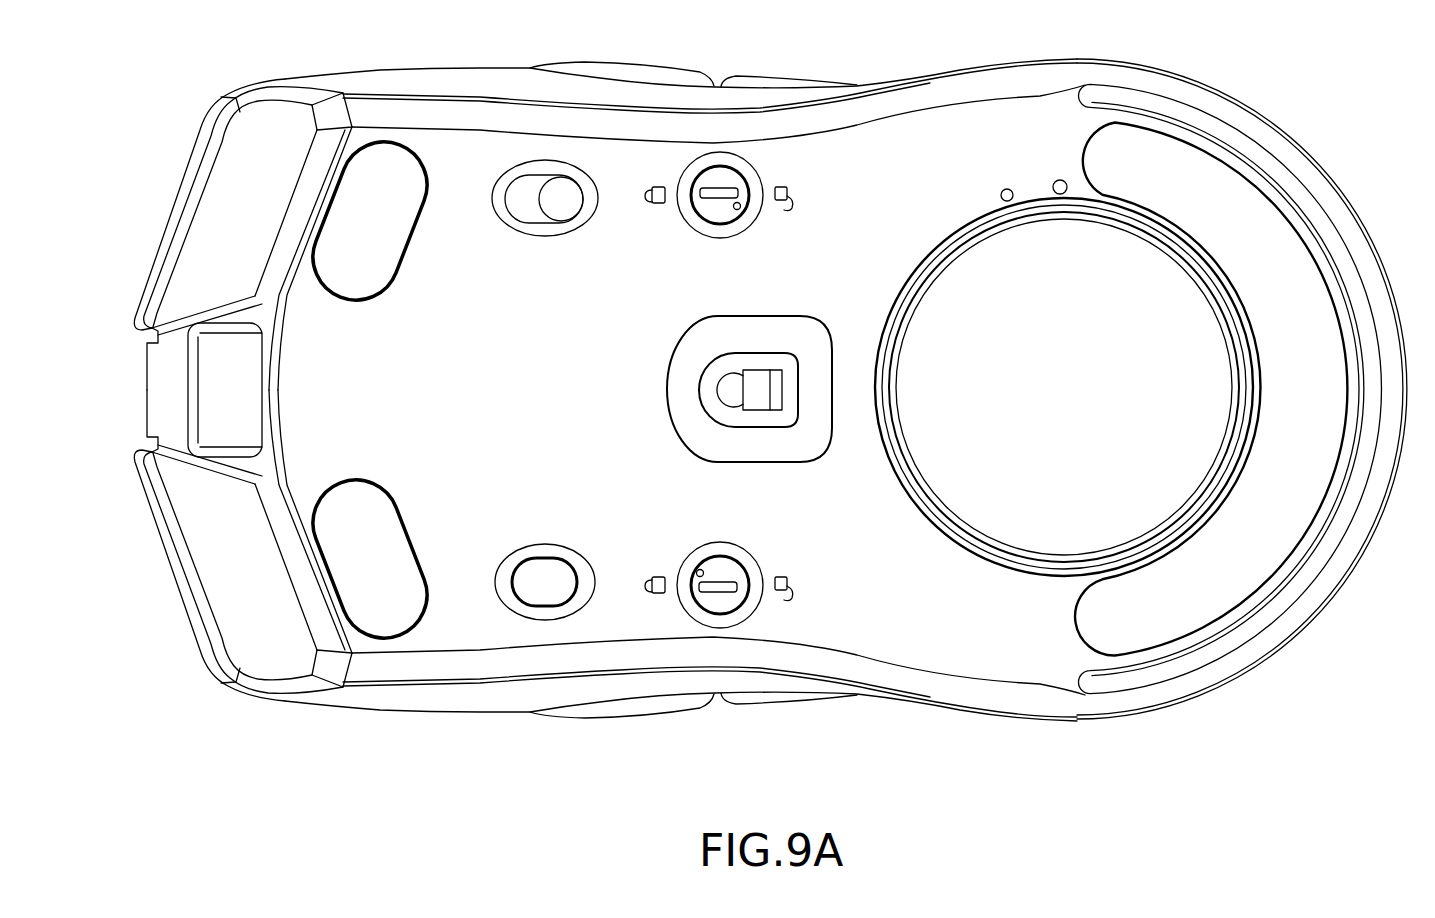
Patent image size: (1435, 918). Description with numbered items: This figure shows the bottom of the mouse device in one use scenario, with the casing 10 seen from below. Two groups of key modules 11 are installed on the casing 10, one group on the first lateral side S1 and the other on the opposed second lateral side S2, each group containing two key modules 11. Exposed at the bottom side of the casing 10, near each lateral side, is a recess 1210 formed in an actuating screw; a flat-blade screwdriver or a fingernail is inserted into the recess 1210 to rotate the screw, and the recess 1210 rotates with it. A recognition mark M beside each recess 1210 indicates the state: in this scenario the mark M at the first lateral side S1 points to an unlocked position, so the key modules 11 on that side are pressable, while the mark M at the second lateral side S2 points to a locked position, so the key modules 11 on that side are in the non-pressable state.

The casing 10 is at (1041, 76).
The key module 11 is at (628, 78).
The recess 1210 is at (719, 184).
The recognition mark M is at (741, 210).
The first lateral side S1 is at (692, 40).
The second lateral side S2 is at (672, 723).